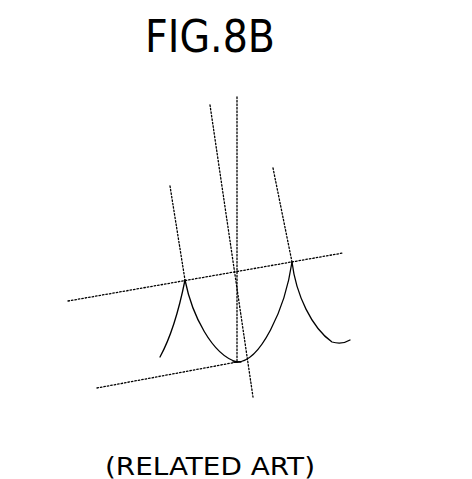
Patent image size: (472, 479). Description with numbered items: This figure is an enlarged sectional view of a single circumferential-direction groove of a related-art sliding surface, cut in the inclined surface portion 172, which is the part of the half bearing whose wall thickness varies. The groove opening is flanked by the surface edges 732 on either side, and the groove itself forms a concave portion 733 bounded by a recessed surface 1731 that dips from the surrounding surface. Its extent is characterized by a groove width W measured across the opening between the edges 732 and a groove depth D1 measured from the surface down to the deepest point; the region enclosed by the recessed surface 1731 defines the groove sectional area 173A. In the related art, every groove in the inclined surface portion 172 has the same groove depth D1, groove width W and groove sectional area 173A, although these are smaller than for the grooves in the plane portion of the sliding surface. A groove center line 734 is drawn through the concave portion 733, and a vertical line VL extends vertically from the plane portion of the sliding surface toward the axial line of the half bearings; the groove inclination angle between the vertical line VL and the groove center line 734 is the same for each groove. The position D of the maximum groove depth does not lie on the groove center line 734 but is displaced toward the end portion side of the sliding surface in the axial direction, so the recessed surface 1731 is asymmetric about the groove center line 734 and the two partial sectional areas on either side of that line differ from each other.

The inclined surface portion 172 is at (137, 290).
The tooth tip (cusp) 732 is at (185, 280).
The valley (concave portion) between teeth 733 is at (237, 272).
The groove center line 734 is at (218, 162).
The recessed surface 1731 is at (266, 334).
The groove sectional area 173A is at (248, 366).
The vertical line VL is at (247, 178).
The groove width W is at (273, 190).
The groove depth D1 is at (83, 300).
The position of the maximum groove depth D is at (237, 363).